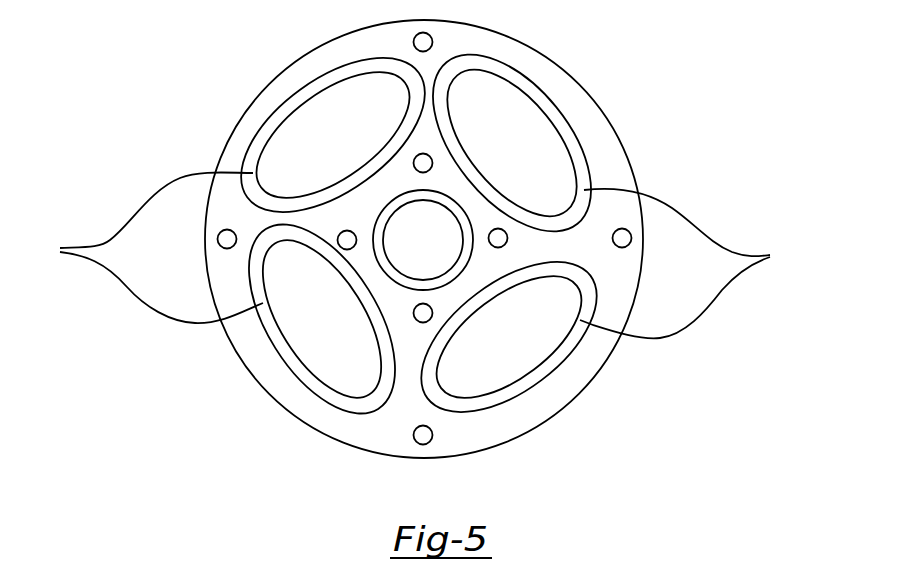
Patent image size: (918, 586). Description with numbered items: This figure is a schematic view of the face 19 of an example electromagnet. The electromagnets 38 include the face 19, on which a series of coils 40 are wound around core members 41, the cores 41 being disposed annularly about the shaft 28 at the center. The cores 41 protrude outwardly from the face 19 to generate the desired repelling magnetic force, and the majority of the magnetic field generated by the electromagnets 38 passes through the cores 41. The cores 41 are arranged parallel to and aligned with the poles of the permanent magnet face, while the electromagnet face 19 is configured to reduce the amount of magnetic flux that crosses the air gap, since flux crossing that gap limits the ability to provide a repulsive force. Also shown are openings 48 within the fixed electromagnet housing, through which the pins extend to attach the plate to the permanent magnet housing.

The face 19 is at (257, 55).
The electromagnets 38 is at (257, 449).
The shaft 28 is at (414, 251).
The core members 41 is at (515, 349).
The openings 48 is at (347, 240).
The coils 40 is at (419, 255).